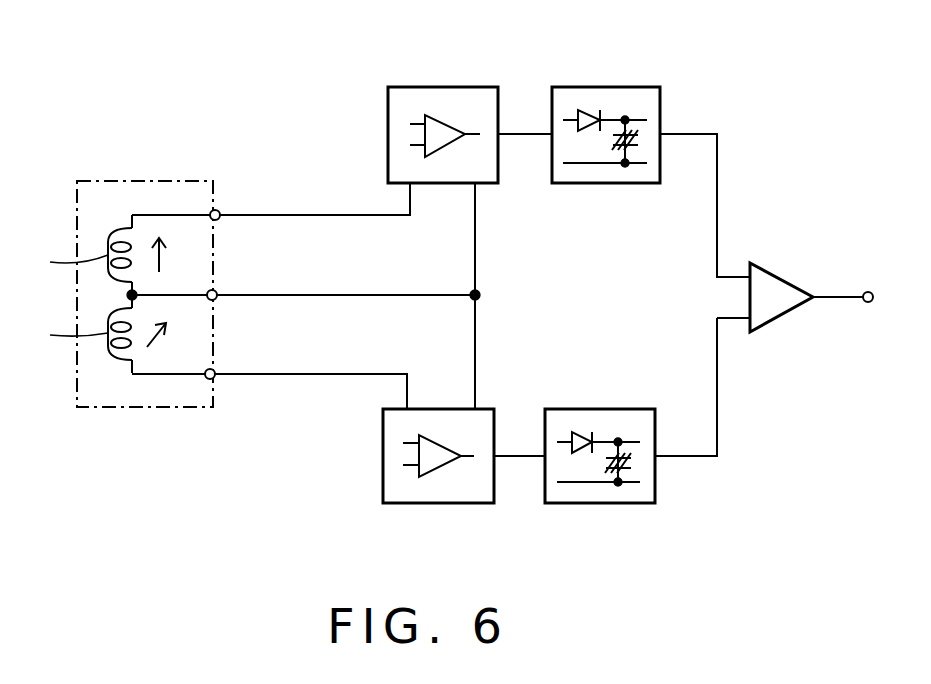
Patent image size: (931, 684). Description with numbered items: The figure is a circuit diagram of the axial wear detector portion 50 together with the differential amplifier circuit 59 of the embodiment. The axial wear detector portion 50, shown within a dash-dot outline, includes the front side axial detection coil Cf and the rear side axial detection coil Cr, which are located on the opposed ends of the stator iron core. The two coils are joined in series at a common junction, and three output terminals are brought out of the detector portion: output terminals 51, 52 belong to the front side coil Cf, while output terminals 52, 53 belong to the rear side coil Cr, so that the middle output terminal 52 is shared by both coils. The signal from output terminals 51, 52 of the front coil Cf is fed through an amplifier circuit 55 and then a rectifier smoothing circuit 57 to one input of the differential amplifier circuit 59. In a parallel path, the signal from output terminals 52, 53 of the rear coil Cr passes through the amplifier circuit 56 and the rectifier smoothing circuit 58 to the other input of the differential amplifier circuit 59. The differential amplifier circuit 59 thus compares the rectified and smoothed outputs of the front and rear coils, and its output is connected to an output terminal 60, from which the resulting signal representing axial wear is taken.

The axial wear detector portion 50 is at (122, 180).
The output terminal 51 is at (220, 210).
The output terminal 52 is at (218, 290).
The output terminal 53 is at (216, 370).
The amplifier circuit 55 is at (478, 87).
The amplifier circuit 56 is at (463, 503).
The rectifier smoothing circuit 57 is at (632, 87).
The rectifier smoothing circuit 58 is at (618, 503).
The differential amplifier circuit 59 is at (785, 280).
The output terminal 60 is at (873, 285).